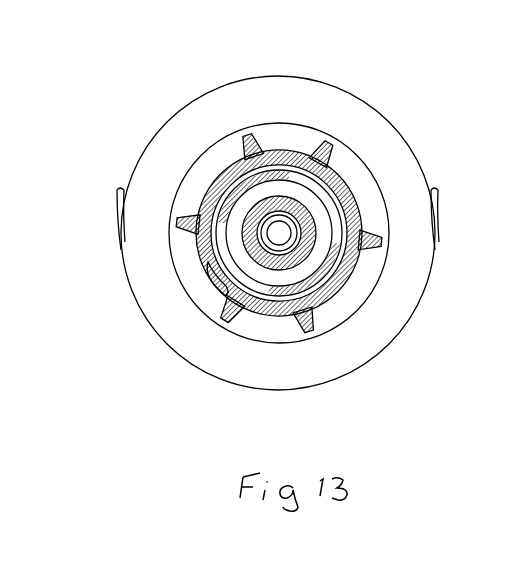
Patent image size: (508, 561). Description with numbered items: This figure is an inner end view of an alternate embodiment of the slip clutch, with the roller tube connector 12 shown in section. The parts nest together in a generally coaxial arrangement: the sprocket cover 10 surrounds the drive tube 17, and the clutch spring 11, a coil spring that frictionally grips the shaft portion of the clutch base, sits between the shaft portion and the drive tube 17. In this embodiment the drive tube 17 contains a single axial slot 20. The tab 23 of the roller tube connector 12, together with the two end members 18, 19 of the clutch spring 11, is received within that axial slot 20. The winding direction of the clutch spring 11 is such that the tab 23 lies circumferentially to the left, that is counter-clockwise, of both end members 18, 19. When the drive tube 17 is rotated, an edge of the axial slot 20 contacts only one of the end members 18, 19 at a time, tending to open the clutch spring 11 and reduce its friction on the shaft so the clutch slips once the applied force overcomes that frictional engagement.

The sprocket cover 10 is at (362, 110).
The clutch spring 11 is at (237, 200).
The roller tube connector 12 is at (363, 197).
The drive tube 17 is at (285, 153).
The end member 18 is at (222, 310).
The end member 19 is at (213, 271).
The axial slot 20 is at (215, 287).
The tab 23 is at (280, 315).